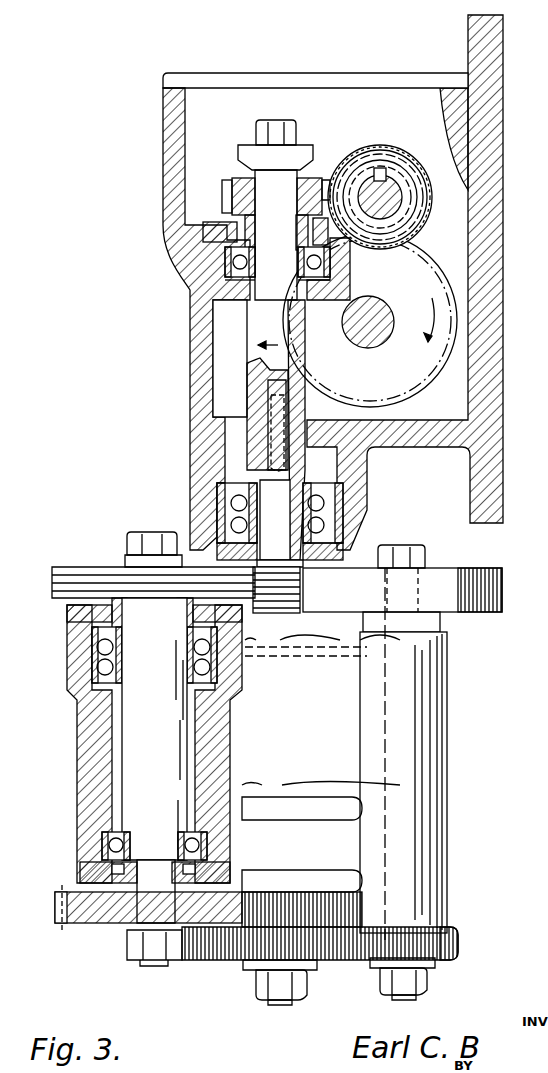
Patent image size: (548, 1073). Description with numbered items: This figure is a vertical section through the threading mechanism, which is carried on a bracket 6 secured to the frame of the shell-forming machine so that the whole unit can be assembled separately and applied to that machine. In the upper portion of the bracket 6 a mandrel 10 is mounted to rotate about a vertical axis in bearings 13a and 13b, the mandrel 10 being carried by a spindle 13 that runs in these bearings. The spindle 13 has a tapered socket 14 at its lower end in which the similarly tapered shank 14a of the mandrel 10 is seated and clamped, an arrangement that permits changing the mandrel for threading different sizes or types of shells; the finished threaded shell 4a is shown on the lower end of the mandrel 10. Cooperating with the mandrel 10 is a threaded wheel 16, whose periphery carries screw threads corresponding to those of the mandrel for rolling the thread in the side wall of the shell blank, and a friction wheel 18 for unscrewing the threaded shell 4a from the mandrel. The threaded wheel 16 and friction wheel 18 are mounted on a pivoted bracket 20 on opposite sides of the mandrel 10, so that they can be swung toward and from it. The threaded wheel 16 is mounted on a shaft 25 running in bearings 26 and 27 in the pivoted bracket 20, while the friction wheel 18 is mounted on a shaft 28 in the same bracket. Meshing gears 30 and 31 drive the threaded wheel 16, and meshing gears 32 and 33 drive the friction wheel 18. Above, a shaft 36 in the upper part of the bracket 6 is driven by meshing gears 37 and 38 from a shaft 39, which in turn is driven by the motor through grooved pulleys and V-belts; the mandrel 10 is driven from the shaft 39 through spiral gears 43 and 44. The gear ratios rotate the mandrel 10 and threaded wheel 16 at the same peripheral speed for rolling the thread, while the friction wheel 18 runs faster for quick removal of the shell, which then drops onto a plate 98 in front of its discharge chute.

The bracket 6 is at (495, 250).
The mandrel 10 is at (272, 548).
The spindle 13 is at (250, 362).
The bearing 13a is at (190, 266).
The bearing 13b is at (216, 505).
The tapered socket 14 is at (268, 441).
The tapered shank 14a is at (272, 472).
The threaded wheel 16 is at (91, 566).
The friction wheel 18 is at (442, 578).
The pivoted bracket 20 is at (372, 695).
The shaft 25 is at (133, 748).
The bearing 26 is at (92, 650).
The bearing 27 is at (100, 845).
The shaft 28 is at (380, 731).
The gear 30 is at (282, 892).
The gear 31 is at (90, 924).
The gear 32 is at (232, 961).
The gear 33 is at (459, 948).
The shaft 36 is at (384, 302).
The gear 37 is at (386, 150).
The gear 38 is at (422, 262).
The shaft 39 is at (396, 192).
The spiral gear 43 is at (372, 136).
The spiral gear 44 is at (312, 185).
The plate 98 is at (288, 660).
The threaded shell 4a is at (282, 610).